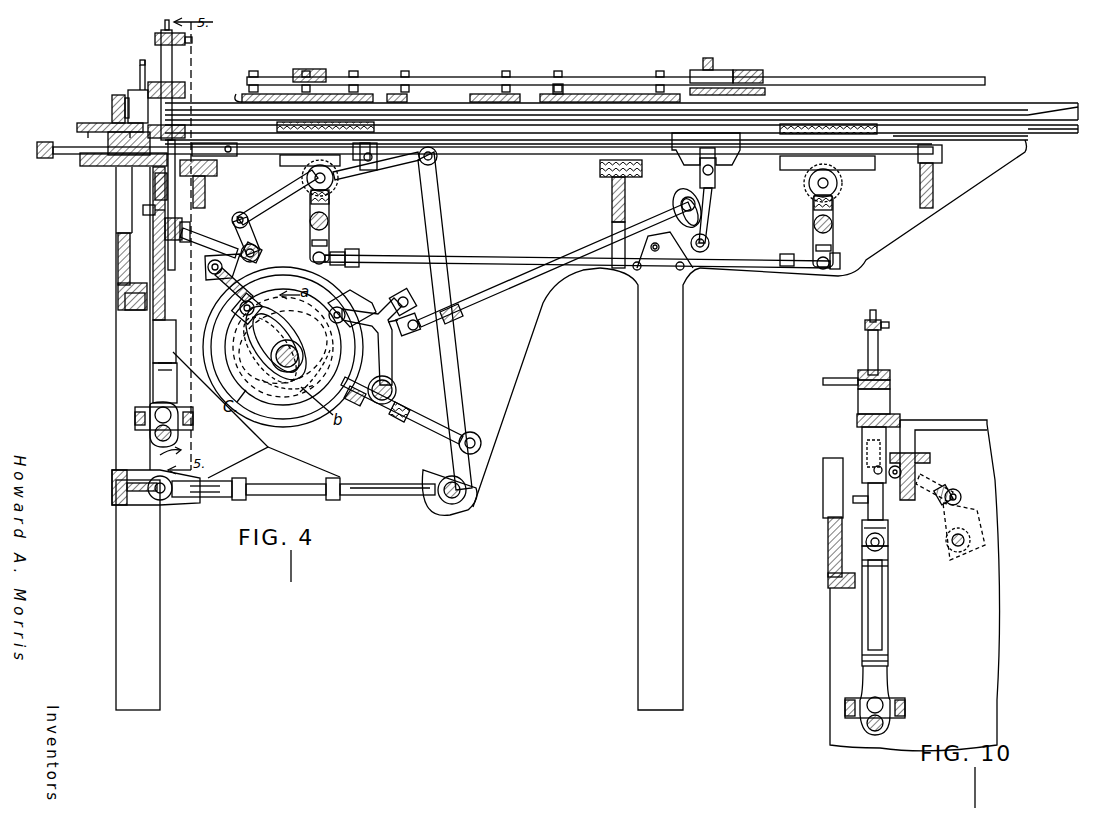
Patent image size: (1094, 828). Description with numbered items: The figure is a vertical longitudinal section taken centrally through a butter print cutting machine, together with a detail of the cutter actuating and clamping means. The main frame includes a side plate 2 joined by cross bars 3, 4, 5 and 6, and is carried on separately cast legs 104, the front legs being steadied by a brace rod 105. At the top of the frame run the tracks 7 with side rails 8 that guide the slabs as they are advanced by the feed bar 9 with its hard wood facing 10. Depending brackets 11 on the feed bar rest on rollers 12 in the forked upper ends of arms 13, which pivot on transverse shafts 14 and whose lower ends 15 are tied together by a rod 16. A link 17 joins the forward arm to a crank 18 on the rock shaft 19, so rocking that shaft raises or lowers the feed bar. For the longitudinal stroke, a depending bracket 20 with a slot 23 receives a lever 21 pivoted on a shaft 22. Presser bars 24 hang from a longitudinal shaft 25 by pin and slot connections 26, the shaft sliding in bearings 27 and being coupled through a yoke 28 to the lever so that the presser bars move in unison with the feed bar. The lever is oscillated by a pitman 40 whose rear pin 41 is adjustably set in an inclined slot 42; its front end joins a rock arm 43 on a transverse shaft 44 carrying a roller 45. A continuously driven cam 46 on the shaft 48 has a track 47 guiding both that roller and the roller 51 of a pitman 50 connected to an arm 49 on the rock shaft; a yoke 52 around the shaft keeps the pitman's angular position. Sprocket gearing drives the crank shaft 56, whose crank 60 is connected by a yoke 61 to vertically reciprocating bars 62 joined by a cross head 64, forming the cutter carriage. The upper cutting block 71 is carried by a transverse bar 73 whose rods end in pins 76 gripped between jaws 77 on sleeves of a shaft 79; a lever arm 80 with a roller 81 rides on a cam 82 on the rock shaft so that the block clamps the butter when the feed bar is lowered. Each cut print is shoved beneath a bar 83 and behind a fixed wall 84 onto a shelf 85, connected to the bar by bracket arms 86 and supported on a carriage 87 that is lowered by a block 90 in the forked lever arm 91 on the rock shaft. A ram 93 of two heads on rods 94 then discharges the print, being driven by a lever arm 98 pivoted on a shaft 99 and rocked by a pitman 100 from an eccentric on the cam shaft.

In FIG. 4, the side plate 2 is at (527, 328).
In FIG. 10, the side plate 2 is at (993, 478).
In FIG. 4, the cross bar 3 is at (118, 265).
In FIG. 10, the cross bar 3 is at (828, 540).
In FIG. 4, the cross bar 4 is at (205, 193).
In FIG. 10, the cross bar 4 is at (928, 457).
In FIG. 4, the cross bar 5 is at (612, 192).
In FIG. 4, the cross bar 6 is at (933, 177).
In FIG. 4, the track 7 is at (1067, 132).
In FIG. 4, the side rail 8 is at (1030, 115).
In FIG. 4, the feed bar 9 is at (515, 125).
In FIG. 4, the facing 10 is at (485, 130).
In FIG. 4, the depending bracket 11 is at (288, 157).
In FIG. 4, the roller 12 is at (332, 188).
In FIG. 4, the arm 13 is at (328, 202).
In FIG. 4, the transverse shaft 14 is at (329, 226).
In FIG. 4, the lower end of arm 15 is at (329, 248).
In FIG. 4, the rod 16 is at (758, 264).
In FIG. 4, the link 17 is at (272, 207).
In FIG. 4, the crank 18 is at (252, 230).
In FIG. 4, the shaft 19 is at (258, 253).
In FIG. 10, the shaft 19 is at (953, 545).
In FIG. 4, the depending bracket 20 is at (733, 163).
In FIG. 4, the lever 21 is at (710, 200).
In FIG. 4, the shaft 22 is at (709, 243).
In FIG. 4, the slot 23 is at (713, 175).
In FIG. 4, the presser bar 24 is at (238, 95).
In FIG. 4, the longitudinal shaft 25 is at (450, 80).
In FIG. 4, the pin and slot connection 26 is at (558, 78).
In FIG. 4, the bearing 27 is at (313, 72).
In FIG. 4, the yoke 28 is at (720, 73).
In FIG. 4, the pitman 40 is at (500, 290).
In FIG. 4, the pin 41 is at (700, 212).
In FIG. 4, the inclined slot 42 is at (702, 225).
In FIG. 4, the rock arm 43 is at (390, 352).
In FIG. 4, the transverse shaft 44 is at (402, 375).
In FIG. 4, the roller 45 is at (328, 366).
In FIG. 4, the cam 46 is at (317, 283).
In FIG. 4, the cam track 47 is at (345, 300).
In FIG. 4, the transverse shaft 48 is at (288, 365).
In FIG. 4, the arm 49 is at (225, 283).
In FIG. 4, the pitman 50 is at (230, 302).
In FIG. 4, the roller 51 is at (283, 345).
In FIG. 4, the yoke 52 is at (317, 360).
In FIG. 4, the crank shaft 56 is at (162, 438).
In FIG. 10, the crank shaft 56 is at (885, 723).
In FIG. 4, the crank 60 is at (162, 413).
In FIG. 10, the crank 60 is at (888, 697).
In FIG. 4, the yoke 61 is at (158, 350).
In FIG. 10, the yoke 61 is at (882, 620).
In FIG. 10, the bar 62 is at (867, 340).
In FIG. 10, the cross head 64 is at (867, 323).
In FIG. 10, the upper cutting block 71 is at (897, 383).
In FIG. 10, the transverse bar 73 is at (892, 372).
In FIG. 10, the pin 76 is at (877, 470).
In FIG. 10, the jaw 77 is at (855, 452).
In FIG. 4, the shaft 79 is at (168, 185).
In FIG. 10, the shaft 79 is at (896, 478).
In FIG. 10, the lever arm 80 is at (917, 477).
In FIG. 10, the roller 81 is at (961, 496).
In FIG. 10, the cam 82 is at (966, 545).
In FIG. 4, the bar 83 is at (145, 90).
In FIG. 4, the fixed wall 84 is at (120, 100).
In FIG. 4, the shelf 85 is at (108, 126).
In FIG. 4, the bracket arm 86 is at (128, 92).
In FIG. 4, the carriage 87 is at (153, 320).
In FIG. 4, the block 90 is at (165, 236).
In FIG. 4, the lever arm 91 is at (210, 242).
In FIG. 4, the ram 93 is at (42, 152).
In FIG. 4, the rod 94 is at (562, 155).
In FIG. 4, the lever arm 98 is at (448, 350).
In FIG. 4, the shaft 99 is at (462, 494).
In FIG. 4, the pitman 100 is at (426, 428).
In FIG. 4, the leg 104 is at (120, 527).
In FIG. 4, the brace rod 105 is at (232, 498).